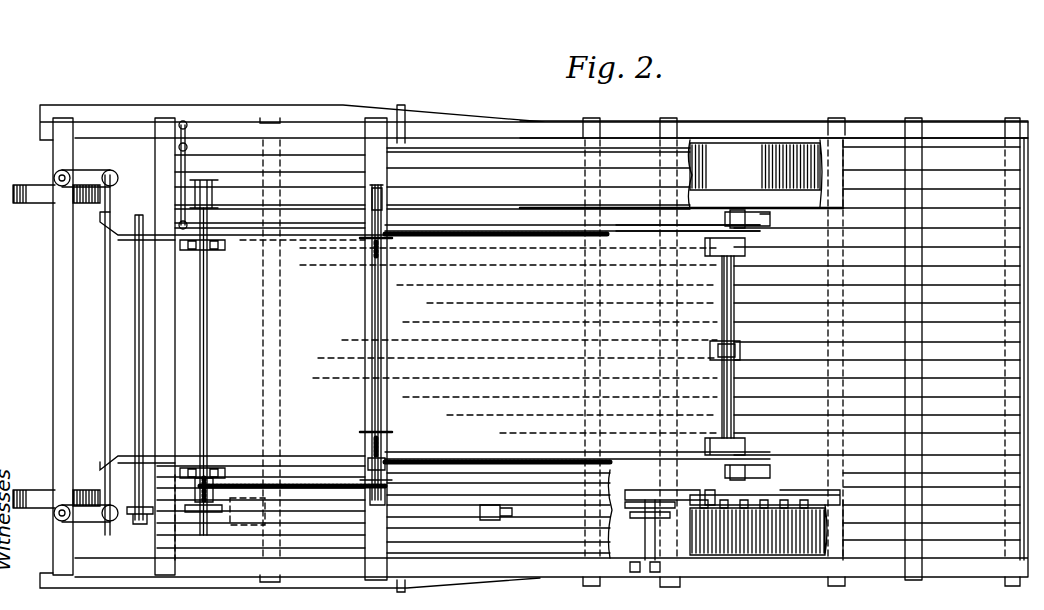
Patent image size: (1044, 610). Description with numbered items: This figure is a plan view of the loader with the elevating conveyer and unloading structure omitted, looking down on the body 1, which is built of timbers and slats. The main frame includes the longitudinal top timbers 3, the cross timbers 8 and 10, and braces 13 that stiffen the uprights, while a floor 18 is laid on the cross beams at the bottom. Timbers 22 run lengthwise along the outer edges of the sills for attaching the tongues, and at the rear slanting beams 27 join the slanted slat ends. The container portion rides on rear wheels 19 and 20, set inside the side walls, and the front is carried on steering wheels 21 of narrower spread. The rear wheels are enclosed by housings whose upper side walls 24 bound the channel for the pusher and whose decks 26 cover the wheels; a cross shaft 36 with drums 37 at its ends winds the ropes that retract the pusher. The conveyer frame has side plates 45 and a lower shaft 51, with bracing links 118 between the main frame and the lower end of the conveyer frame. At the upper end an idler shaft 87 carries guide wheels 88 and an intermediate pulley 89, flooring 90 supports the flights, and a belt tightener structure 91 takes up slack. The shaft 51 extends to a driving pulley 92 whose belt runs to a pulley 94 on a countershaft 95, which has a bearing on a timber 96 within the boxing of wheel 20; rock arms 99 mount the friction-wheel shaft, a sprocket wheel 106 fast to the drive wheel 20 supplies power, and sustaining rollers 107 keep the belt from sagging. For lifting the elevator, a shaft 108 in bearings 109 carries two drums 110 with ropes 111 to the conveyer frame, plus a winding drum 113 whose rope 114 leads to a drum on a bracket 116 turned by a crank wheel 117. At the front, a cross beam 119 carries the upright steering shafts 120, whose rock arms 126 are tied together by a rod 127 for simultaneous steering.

The body 1 is at (551, 340).
The longitudinal top timbers 3 is at (860, 135).
The cross timbers 8 is at (672, 586).
The cross timbers 10 is at (372, 327).
The braces 13 is at (707, 122).
The floor 18 is at (588, 347).
The rear wheel 19 is at (766, 174).
The rear wheel 20 is at (800, 545).
The front steering wheels 21 is at (25, 203).
The timbers 22 is at (245, 113).
The upper side walls 24 is at (497, 229).
The decks 26 is at (539, 349).
The slanting beams 27 is at (958, 125).
The cross shaft 36 is at (208, 222).
The drums 37 is at (213, 198).
The side plates 45 is at (627, 233).
The shaft 51 is at (140, 394).
The idler shaft 87 is at (735, 393).
The guide wheels 88 is at (745, 248).
The intermediate pulley 89 is at (742, 351).
The flooring 90 is at (734, 296).
The belt tightener structure 91 is at (772, 224).
The driving pulley 92 is at (140, 527).
The pulley 94 is at (645, 512).
The countershaft 95 is at (648, 548).
The timber 96 is at (805, 494).
The rock arms 99 is at (668, 498).
The sprocket wheel 106 is at (738, 540).
The sustaining rollers 107 is at (240, 525).
The shaft 108 is at (375, 392).
The bearings 109 is at (385, 205).
The drums 110 is at (390, 232).
The rope 111 is at (510, 237).
The winding drum 113 is at (392, 490).
The rope 114 is at (240, 484).
The bracket 116 is at (203, 478).
The crank wheel 117 is at (203, 512).
The bracing links 118 is at (186, 168).
The cross beam 119 is at (60, 302).
The steering shafts 120 is at (54, 178).
The rock arm 126 is at (90, 173).
The rod 127 is at (105, 322).